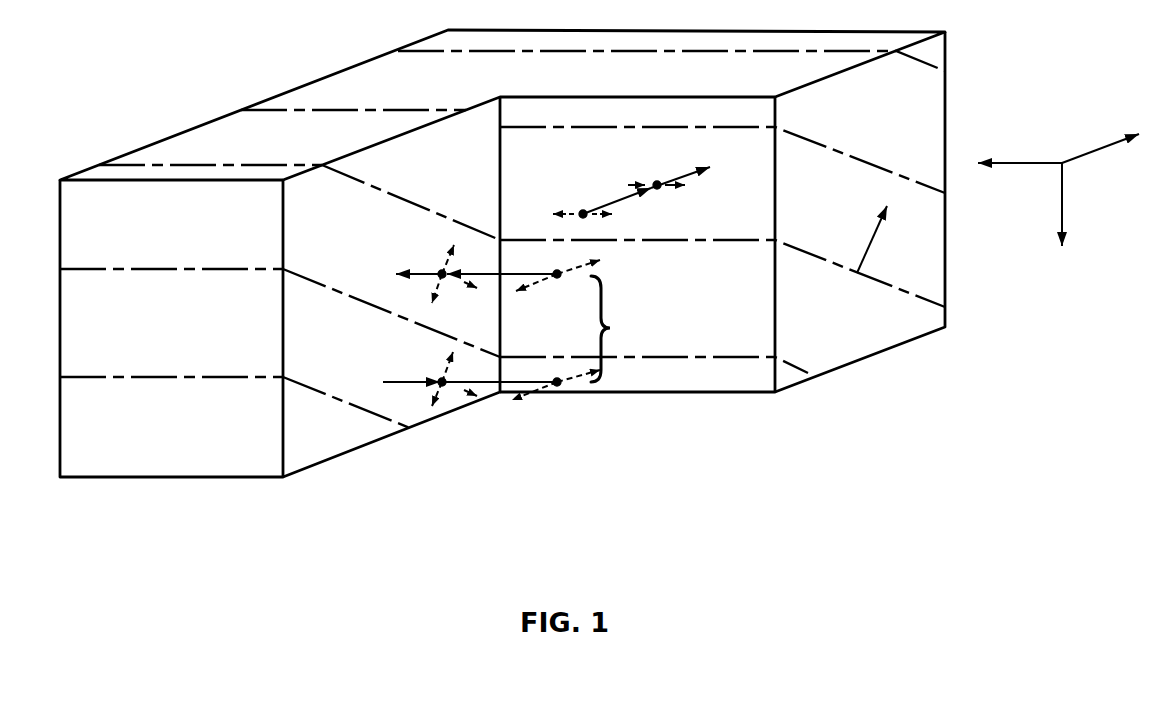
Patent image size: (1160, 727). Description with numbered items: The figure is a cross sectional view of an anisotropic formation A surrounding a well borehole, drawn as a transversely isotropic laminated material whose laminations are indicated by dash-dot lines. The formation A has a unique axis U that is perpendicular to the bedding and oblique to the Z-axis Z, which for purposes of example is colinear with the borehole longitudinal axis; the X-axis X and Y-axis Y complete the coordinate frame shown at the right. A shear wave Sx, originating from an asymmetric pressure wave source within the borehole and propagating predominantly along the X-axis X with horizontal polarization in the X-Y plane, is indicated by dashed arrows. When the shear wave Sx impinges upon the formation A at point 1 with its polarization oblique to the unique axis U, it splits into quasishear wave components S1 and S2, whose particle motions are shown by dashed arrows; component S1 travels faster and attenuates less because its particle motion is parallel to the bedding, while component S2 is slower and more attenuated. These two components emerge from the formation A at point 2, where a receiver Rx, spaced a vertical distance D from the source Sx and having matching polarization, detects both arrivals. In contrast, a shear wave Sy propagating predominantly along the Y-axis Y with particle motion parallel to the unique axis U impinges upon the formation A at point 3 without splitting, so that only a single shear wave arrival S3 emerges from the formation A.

The anisotropic formation A is at (250, 91).
The point 1 is at (476, 278).
The point 2 is at (441, 386).
The point 3 is at (657, 182).
The quasishear wave component S1 is at (430, 268).
The quasishear wave component S2 is at (469, 358).
The shear wave arrival S3 is at (701, 172).
The shear wave Sx is at (557, 270).
The shear wave Sy is at (583, 210).
The receiver Rx is at (557, 378).
The vertical distance D is at (612, 329).
The unique axis U is at (880, 228).
The X-axis X is at (1012, 155).
The Y-axis Y is at (1110, 140).
The Z-axis Z is at (1061, 220).